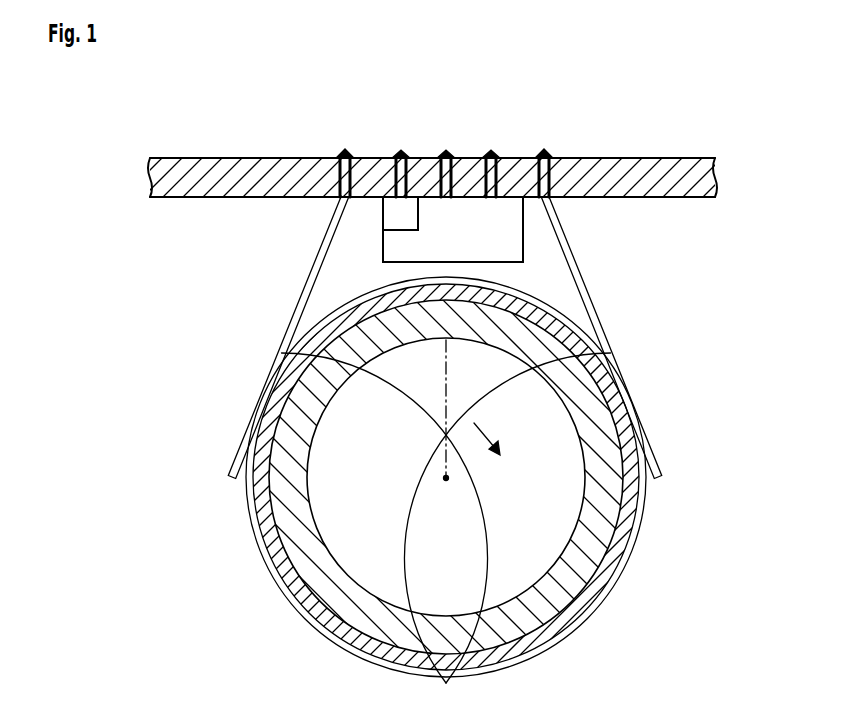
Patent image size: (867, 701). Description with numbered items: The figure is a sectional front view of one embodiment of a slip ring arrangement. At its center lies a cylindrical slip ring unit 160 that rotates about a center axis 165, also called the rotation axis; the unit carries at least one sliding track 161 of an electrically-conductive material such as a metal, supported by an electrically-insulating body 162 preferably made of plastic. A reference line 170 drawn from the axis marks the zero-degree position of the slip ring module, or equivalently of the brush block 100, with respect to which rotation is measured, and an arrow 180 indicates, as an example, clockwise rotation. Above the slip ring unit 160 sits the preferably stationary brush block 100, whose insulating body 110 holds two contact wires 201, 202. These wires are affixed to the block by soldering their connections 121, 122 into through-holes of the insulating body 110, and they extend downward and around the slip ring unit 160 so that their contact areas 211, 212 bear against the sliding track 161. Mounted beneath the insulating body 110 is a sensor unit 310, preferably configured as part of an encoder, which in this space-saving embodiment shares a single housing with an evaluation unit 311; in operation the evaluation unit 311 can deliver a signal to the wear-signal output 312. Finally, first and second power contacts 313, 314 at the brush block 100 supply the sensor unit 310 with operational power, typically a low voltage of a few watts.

The brush block 100 is at (668, 141).
The insulating body 110 is at (646, 198).
The connection of contact wire 121 is at (346, 148).
The connection of contact wire 122 is at (544, 148).
The wear-signal output 312 is at (401, 150).
The first power contact 313 is at (446, 150).
The second power contact 314 is at (491, 150).
The sensor unit 310 is at (545, 252).
The evaluation unit 311 is at (393, 216).
The contact wire 201 is at (298, 309).
The contact wire 202 is at (592, 309).
The contact area 211 is at (250, 404).
The contact area 212 is at (642, 404).
The slip ring unit 160 is at (246, 564).
The sliding track 161 is at (628, 540).
The electrically-insulating body 162 is at (283, 483).
The center axis 165 is at (448, 478).
The reference line 170 is at (448, 398).
The arrow 180 is at (446, 418).